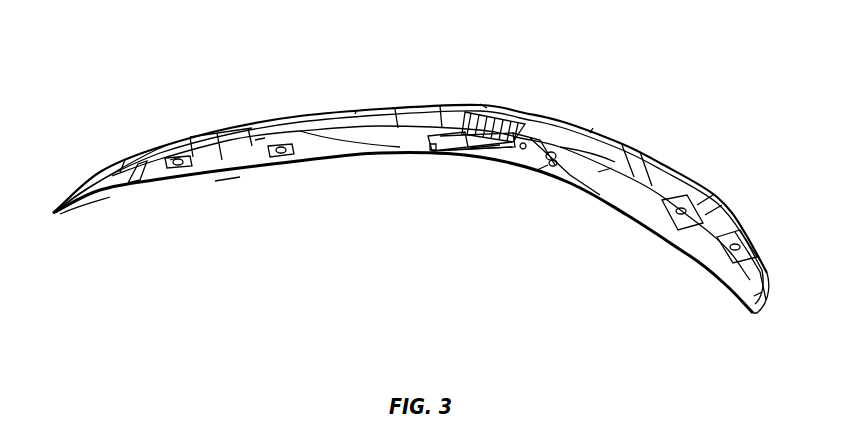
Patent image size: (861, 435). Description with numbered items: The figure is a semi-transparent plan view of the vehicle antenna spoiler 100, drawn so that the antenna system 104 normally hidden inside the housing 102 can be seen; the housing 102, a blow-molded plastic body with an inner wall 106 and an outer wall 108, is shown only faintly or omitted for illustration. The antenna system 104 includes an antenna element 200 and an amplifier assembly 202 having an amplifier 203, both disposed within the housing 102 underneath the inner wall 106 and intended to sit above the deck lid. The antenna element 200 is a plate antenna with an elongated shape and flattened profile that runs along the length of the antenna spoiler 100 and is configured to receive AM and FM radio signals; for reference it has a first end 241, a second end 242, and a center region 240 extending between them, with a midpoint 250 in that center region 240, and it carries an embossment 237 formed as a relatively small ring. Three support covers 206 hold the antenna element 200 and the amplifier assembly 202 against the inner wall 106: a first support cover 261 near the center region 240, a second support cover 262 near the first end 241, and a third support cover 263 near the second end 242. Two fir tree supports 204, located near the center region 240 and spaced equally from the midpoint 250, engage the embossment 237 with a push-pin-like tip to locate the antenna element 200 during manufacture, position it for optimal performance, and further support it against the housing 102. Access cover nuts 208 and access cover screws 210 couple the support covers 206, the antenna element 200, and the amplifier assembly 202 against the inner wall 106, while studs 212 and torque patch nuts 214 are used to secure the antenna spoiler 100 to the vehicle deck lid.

The antenna spoiler 100 is at (419, 181).
The housing 102 is at (83, 190).
The antenna system 104 is at (228, 176).
The inner wall 106 is at (107, 200).
The outer wall 108 is at (103, 171).
The antenna element 200 is at (710, 212).
The amplifier assembly 202 is at (520, 113).
The amplifier 203 is at (495, 124).
The supports 204 is at (396, 122).
The support covers 206 is at (461, 242).
The access cover nuts 208 is at (486, 117).
The access cover screws 210 is at (250, 143).
The studs 212 is at (456, 219).
The torque patch nuts 214 is at (290, 150).
The embossment 237 is at (357, 108).
The center region 240 is at (486, 104).
The first end 241 is at (160, 147).
The second end 242 is at (745, 228).
The midpoint 250 is at (500, 110).
The first support cover 261 is at (583, 192).
The second support cover 262 is at (287, 153).
The third support cover 263 is at (728, 265).